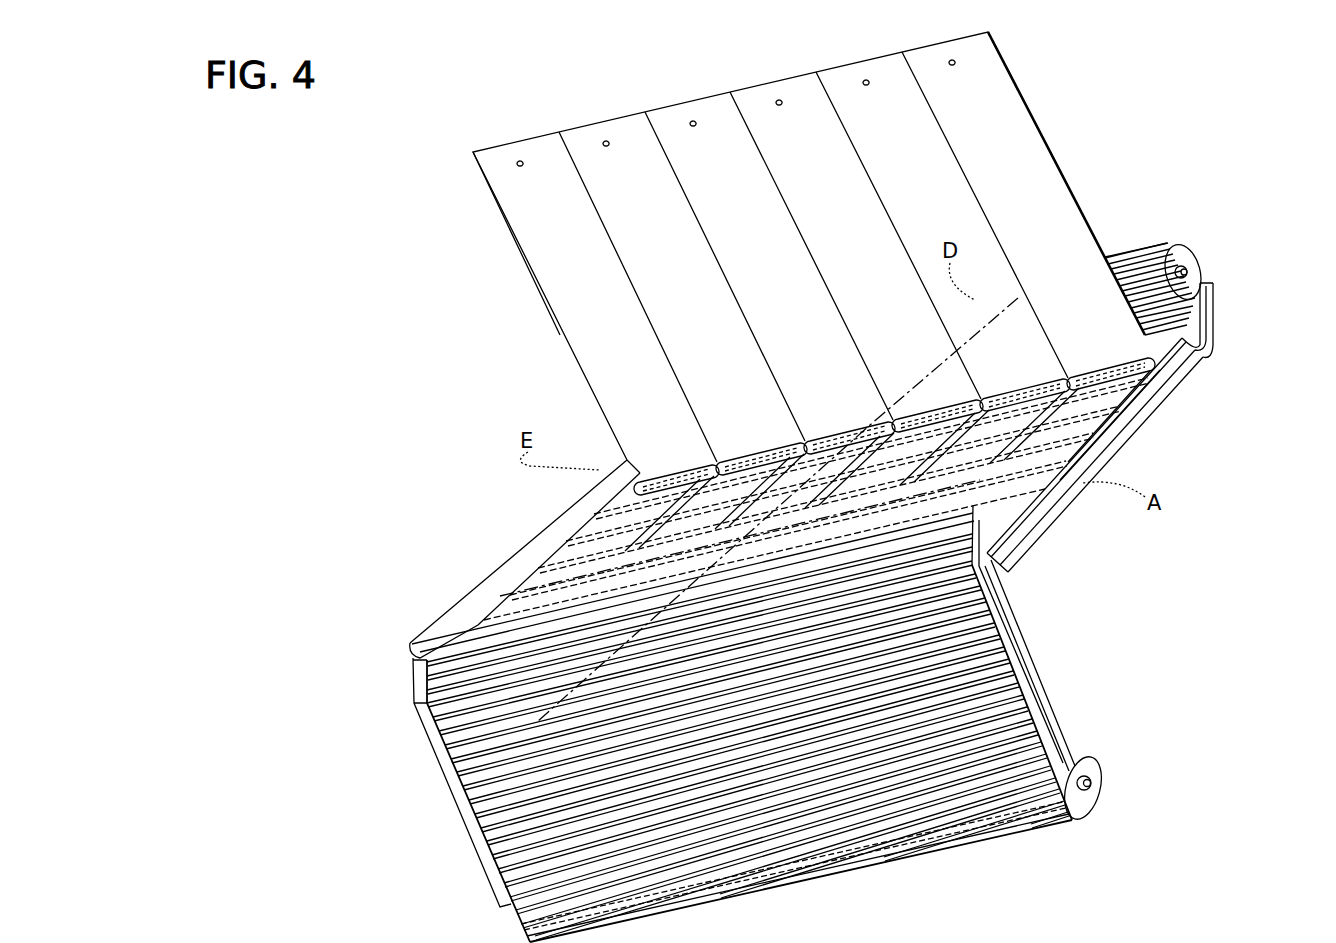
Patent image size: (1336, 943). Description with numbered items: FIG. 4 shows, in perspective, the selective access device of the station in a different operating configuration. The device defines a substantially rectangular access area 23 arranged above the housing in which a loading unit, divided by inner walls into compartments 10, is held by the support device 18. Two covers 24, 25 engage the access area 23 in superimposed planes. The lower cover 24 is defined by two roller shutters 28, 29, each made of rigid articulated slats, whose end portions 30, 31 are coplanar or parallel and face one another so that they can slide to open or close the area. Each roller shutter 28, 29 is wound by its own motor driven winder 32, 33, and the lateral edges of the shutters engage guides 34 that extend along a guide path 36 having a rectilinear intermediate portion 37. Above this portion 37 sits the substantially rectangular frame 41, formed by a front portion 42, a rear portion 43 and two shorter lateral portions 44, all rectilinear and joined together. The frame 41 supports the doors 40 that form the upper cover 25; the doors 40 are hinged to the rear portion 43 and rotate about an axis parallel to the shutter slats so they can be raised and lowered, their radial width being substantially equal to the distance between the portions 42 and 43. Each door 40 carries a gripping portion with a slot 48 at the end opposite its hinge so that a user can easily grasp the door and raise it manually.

The compartments 10 is at (1082, 485).
The support device 18 is at (1195, 392).
The access area 23 is at (488, 600).
The cover 24 is at (600, 503).
The cover 25 is at (1068, 157).
The roller shutter 28 is at (450, 793).
The roller shutter 29 is at (1212, 306).
The end portion 30 is at (600, 520).
The end portion 31 is at (620, 510).
The motor driven winder 32 is at (1100, 788).
The motor driven winder 33 is at (1147, 250).
The guides 34 is at (1215, 362).
The guide path 36 is at (1140, 395).
The rectilinear intermediate portion 37 is at (1047, 503).
The doors 40 is at (489, 184).
The frame 41 is at (418, 622).
The front portion 42 is at (428, 668).
The rear portion 43 is at (1200, 280).
The lateral portions 44 is at (1150, 409).
The slot 48 is at (508, 161).